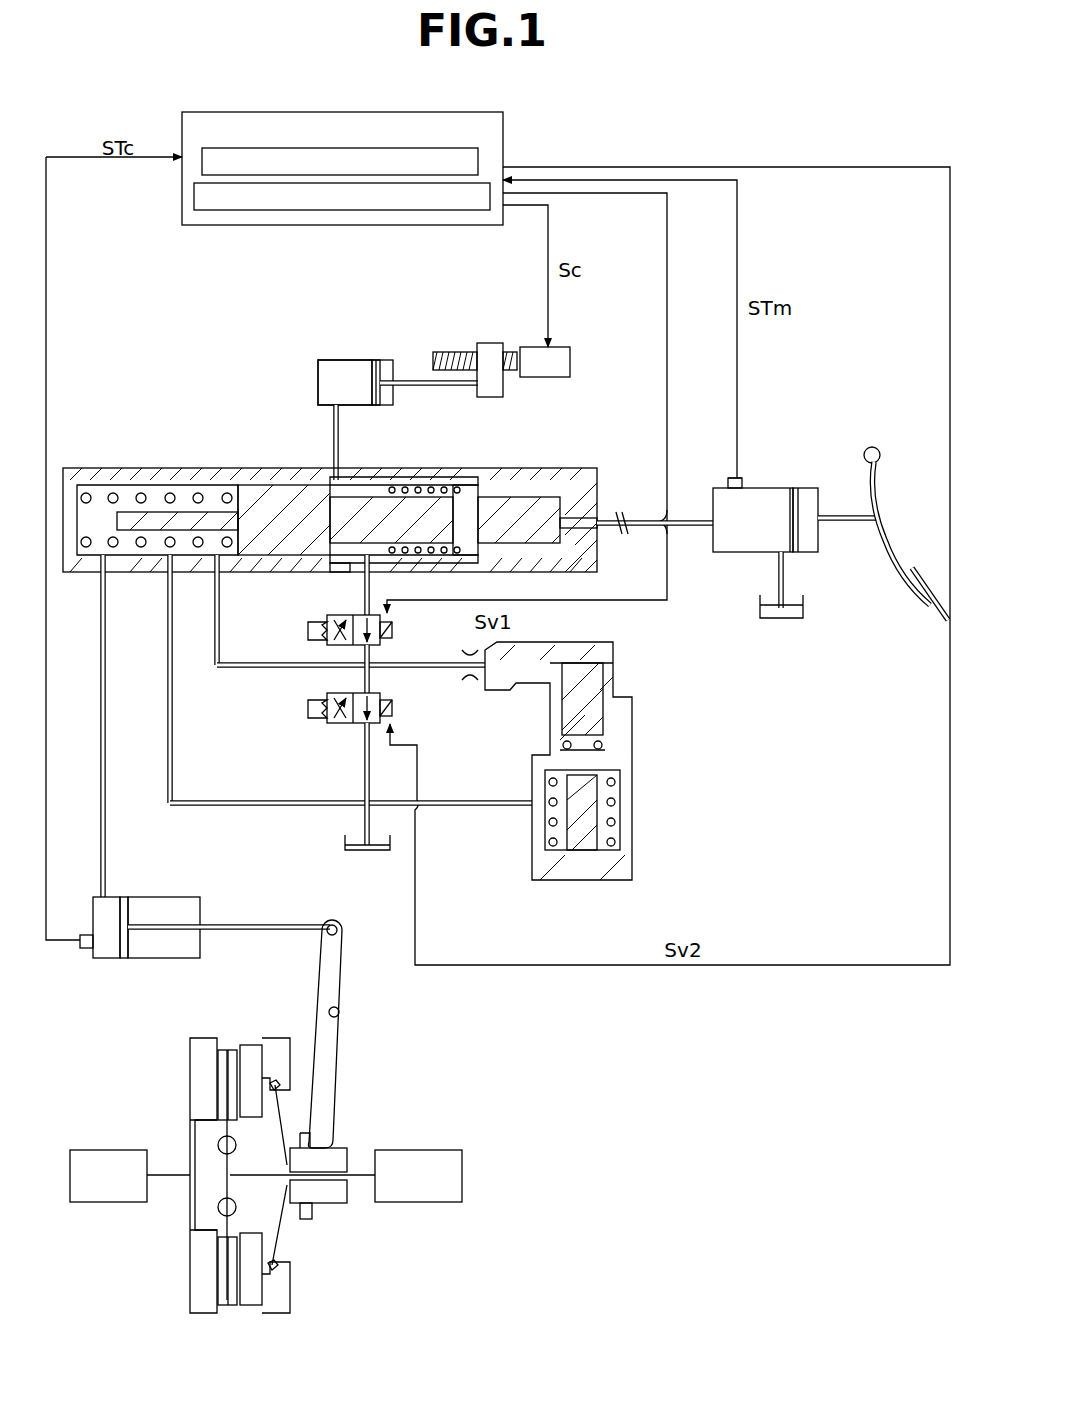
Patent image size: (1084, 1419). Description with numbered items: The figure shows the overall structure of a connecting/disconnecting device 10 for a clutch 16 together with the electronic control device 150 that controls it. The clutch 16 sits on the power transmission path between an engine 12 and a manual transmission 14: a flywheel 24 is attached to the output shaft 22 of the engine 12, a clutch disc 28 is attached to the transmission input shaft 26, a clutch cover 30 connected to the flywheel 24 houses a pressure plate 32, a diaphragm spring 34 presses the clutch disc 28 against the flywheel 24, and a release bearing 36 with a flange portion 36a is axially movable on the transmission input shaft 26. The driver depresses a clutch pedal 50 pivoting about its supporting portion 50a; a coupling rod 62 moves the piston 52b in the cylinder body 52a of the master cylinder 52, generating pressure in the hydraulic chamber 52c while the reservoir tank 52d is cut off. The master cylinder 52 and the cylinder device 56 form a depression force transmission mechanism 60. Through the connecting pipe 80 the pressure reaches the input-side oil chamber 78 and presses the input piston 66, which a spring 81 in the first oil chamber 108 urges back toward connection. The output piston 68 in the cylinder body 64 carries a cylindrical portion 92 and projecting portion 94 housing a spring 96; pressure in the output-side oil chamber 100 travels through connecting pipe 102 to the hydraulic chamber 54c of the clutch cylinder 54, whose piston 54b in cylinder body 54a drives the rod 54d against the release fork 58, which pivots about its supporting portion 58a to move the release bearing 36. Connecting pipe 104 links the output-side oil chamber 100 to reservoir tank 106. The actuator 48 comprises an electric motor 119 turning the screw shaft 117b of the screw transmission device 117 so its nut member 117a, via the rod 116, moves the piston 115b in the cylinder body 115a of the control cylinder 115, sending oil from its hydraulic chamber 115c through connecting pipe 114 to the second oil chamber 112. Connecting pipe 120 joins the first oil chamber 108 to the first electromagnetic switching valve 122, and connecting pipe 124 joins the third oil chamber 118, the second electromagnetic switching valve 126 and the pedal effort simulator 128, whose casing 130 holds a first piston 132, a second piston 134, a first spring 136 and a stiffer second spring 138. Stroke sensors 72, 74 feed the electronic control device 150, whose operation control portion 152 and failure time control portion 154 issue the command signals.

The connecting/disconnecting device 10 is at (680, 128).
The engine 12 is at (108, 1195).
The manual transmission 14 is at (432, 1195).
The clutch 16 is at (262, 1192).
The output shaft 22 is at (168, 1180).
The flywheel 24 is at (208, 1300).
The transmission input shaft 26 is at (355, 1185).
The clutch disc 28 is at (220, 1287).
The clutch cover 30 is at (255, 1042).
The pressure plate 32 is at (252, 1292).
The diaphragm spring 34 is at (282, 1240).
The release bearing 36 is at (330, 1152).
The flange portion 36a is at (305, 1220).
The actuator 48 is at (412, 332).
The clutch pedal 50 is at (906, 548).
The supporting portion 50a is at (880, 452).
The master cylinder 52 is at (763, 543).
The cylinder body 52a is at (728, 482).
The piston 52b is at (798, 550).
The hydraulic chamber 52c is at (748, 540).
The reservoir tank 52d is at (778, 618).
The clutch cylinder 54 is at (200, 928).
The cylinder body 54a is at (170, 897).
The piston 54b is at (124, 958).
The hydraulic chamber 54c is at (112, 900).
The rod 54d is at (240, 932).
The cylinder device 56 is at (568, 420).
The release fork 58 is at (356, 1034).
The supporting portion 58a is at (340, 1012).
The depression force transmission mechanism 60 is at (662, 606).
The coupling rod 62 is at (840, 524).
The cylinder body 64 is at (128, 466).
The input piston 66 is at (520, 495).
The output piston 68 is at (300, 480).
The stroke sensor 72 is at (742, 478).
The stroke sensor 74 is at (85, 948).
The input-side oil chamber 78 is at (597, 500).
The connecting pipe 80 is at (646, 530).
The spring 81 is at (400, 485).
The cylindrical portion 92 is at (240, 492).
The projecting portion 94 is at (160, 530).
The spring 96 is at (248, 490).
The output-side oil chamber 100 is at (103, 560).
The connecting pipe 102 is at (168, 698).
The connecting pipe 104 is at (262, 806).
The reservoir tank 106 is at (365, 855).
The first oil chamber 108 is at (456, 485).
The second oil chamber 112 is at (338, 572).
The connecting pipe 114 is at (334, 445).
The control cylinder 115 is at (320, 360).
The cylinder body 115a is at (318, 364).
The piston 115b is at (376, 360).
The hydraulic chamber 115c is at (330, 390).
The rod 116 is at (402, 384).
The screw transmission device 117 is at (488, 353).
The nut member 117a is at (494, 392).
The screw shaft 117b is at (455, 352).
The third oil chamber 118 is at (225, 600).
The electric motor 119 is at (568, 360).
The connecting pipe 120 is at (372, 585).
The first electromagnetic switching valve 122 is at (352, 622).
The connecting pipe 124 is at (255, 668).
The second electromagnetic switching valve 126 is at (340, 722).
The pedal effort simulator 128 is at (605, 748).
The casing 130 is at (548, 650).
The first piston 132 is at (605, 700).
The second piston 134 is at (632, 810).
The first spring 136 is at (612, 752).
The second spring 138 is at (620, 830).
The electronic control device 150 is at (182, 112).
The operation control portion 152 is at (478, 162).
The failure time control portion 154 is at (213, 210).